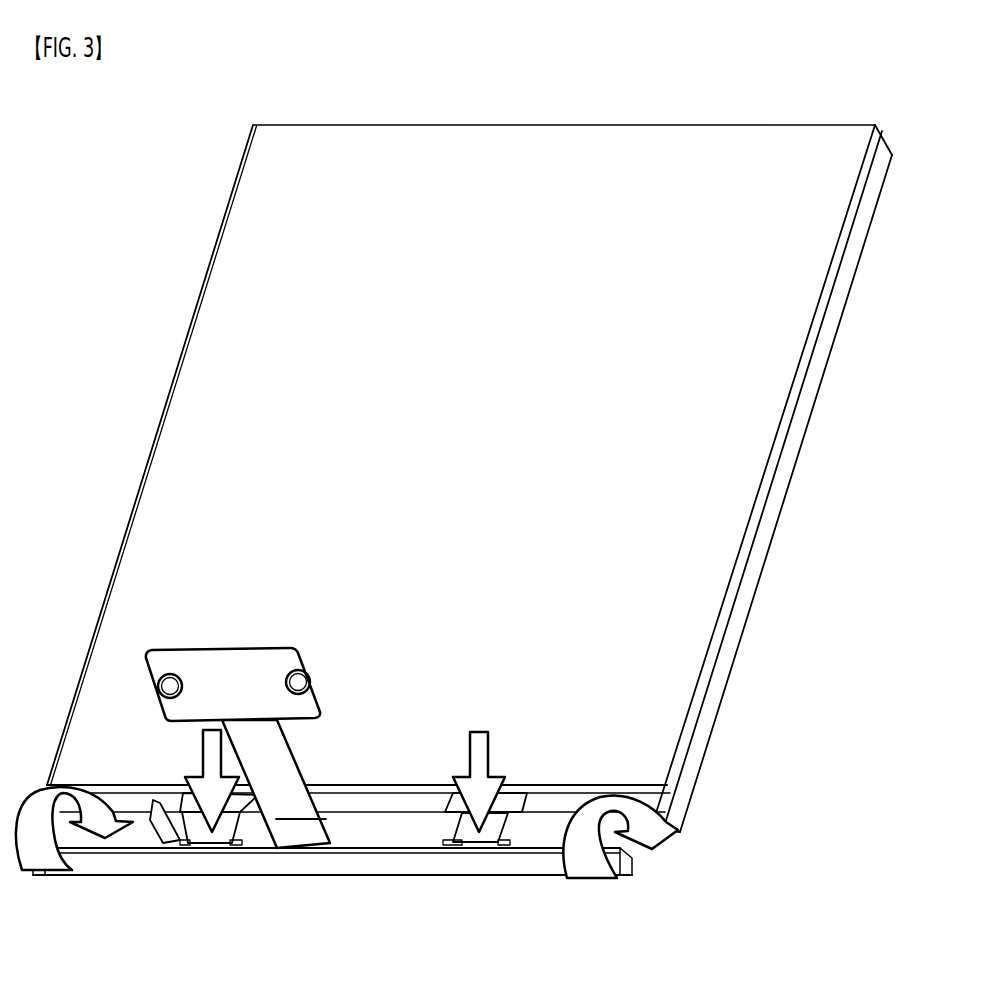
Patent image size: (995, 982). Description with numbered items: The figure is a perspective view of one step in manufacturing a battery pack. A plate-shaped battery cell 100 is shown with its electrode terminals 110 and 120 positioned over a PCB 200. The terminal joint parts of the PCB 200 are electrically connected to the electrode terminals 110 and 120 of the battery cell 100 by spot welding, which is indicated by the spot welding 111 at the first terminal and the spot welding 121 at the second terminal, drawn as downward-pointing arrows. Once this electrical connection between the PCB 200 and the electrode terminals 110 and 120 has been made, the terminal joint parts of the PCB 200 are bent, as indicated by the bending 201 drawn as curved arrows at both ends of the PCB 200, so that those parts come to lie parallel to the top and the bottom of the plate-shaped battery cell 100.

The plate-shaped battery cell 100 is at (465, 350).
The electrode terminal 110 is at (198, 830).
The spot welding 111 is at (208, 758).
The electrode terminal 120 is at (497, 828).
The spot welding 121 is at (481, 748).
The PCB 200 is at (330, 884).
The bending 201 is at (43, 855).